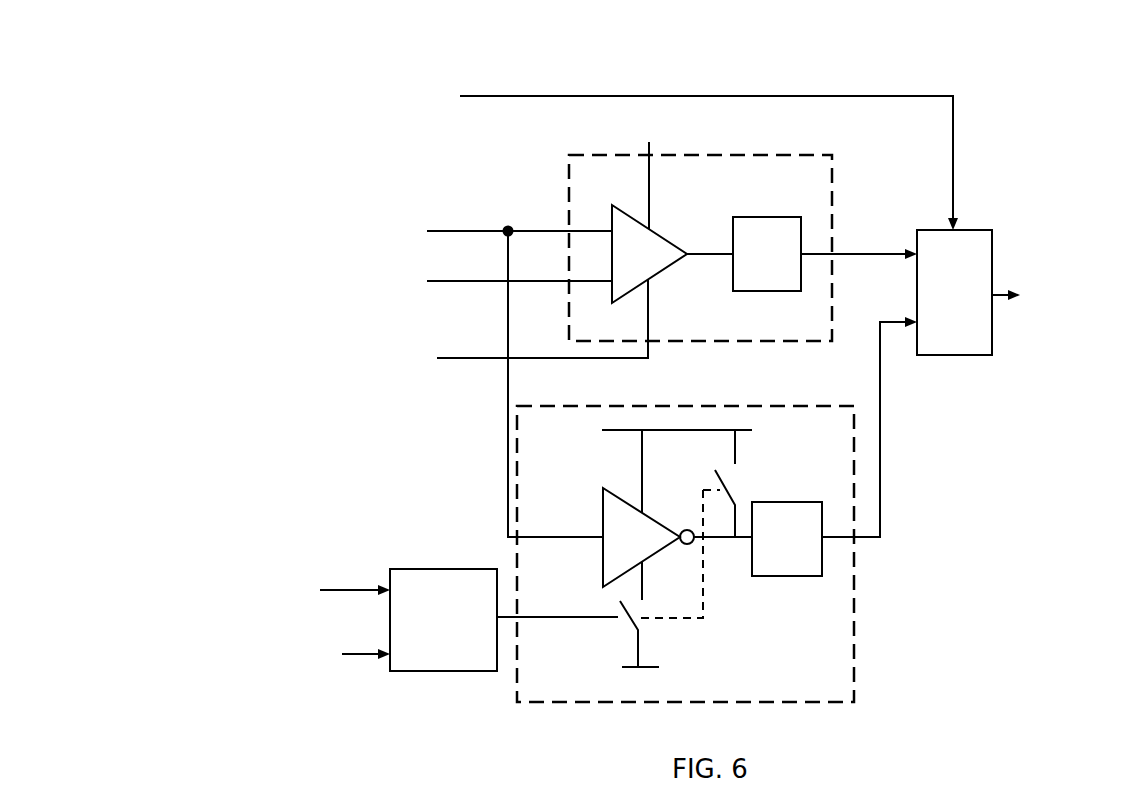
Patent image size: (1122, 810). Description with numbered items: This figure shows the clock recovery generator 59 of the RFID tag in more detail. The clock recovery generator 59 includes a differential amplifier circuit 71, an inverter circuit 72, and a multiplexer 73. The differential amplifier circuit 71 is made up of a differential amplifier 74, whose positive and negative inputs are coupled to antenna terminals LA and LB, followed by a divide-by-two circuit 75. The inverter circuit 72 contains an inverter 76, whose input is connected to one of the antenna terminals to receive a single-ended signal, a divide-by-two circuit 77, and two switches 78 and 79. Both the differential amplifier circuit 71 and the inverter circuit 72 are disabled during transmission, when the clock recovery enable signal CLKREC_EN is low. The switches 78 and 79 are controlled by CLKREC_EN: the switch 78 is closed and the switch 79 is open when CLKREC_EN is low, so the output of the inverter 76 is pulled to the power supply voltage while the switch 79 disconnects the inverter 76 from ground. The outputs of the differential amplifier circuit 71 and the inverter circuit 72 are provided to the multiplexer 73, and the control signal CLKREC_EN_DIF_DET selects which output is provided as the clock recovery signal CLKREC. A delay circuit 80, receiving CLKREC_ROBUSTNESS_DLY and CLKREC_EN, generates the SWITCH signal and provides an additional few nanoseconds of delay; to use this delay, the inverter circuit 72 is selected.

The clock recovery generator 59 is at (834, 30).
The differential amplifier circuit 71 is at (723, 155).
The inverter circuit 72 is at (730, 405).
The multiplexer 73 is at (940, 355).
The differential amplifier 74 is at (622, 207).
The divide-by-2 circuit 75 is at (750, 217).
The inverter 76 is at (622, 495).
The divide-by-2 circuit 77 is at (775, 502).
The switch 78 is at (735, 480).
The switch 79 is at (640, 627).
The delay circuit 80 is at (442, 569).